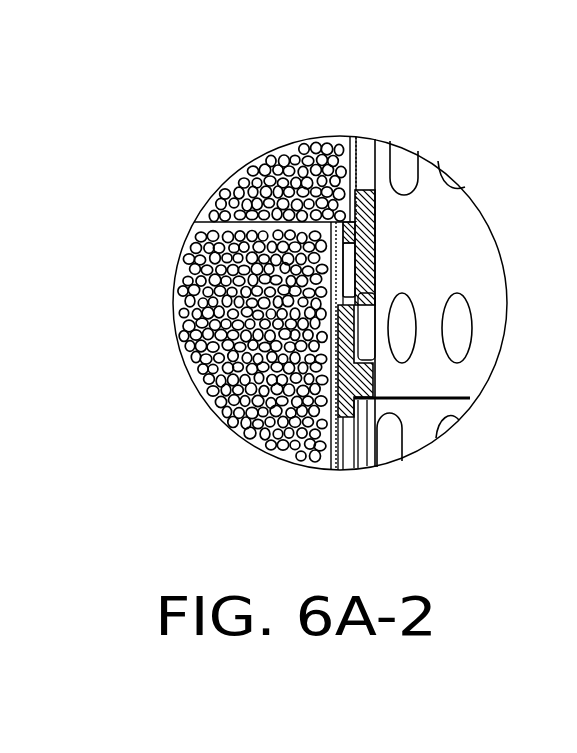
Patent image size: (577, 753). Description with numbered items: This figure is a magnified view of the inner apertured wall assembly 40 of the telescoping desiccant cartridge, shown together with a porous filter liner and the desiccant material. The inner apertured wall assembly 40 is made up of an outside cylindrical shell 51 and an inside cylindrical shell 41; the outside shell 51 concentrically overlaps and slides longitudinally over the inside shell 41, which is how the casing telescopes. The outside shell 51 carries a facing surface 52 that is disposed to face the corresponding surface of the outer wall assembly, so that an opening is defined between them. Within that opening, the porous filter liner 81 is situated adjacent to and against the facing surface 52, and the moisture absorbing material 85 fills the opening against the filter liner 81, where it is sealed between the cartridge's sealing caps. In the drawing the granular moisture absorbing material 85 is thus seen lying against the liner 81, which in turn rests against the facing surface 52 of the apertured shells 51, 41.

The inner apertured wall assembly 40 is at (379, 125).
The inside cylindrical shell 41 is at (378, 218).
The outside cylindrical shell 51 is at (366, 402).
The facing surface 52 is at (333, 358).
The porous filter liner 81 is at (338, 273).
The moisture absorbing material 85 is at (208, 308).